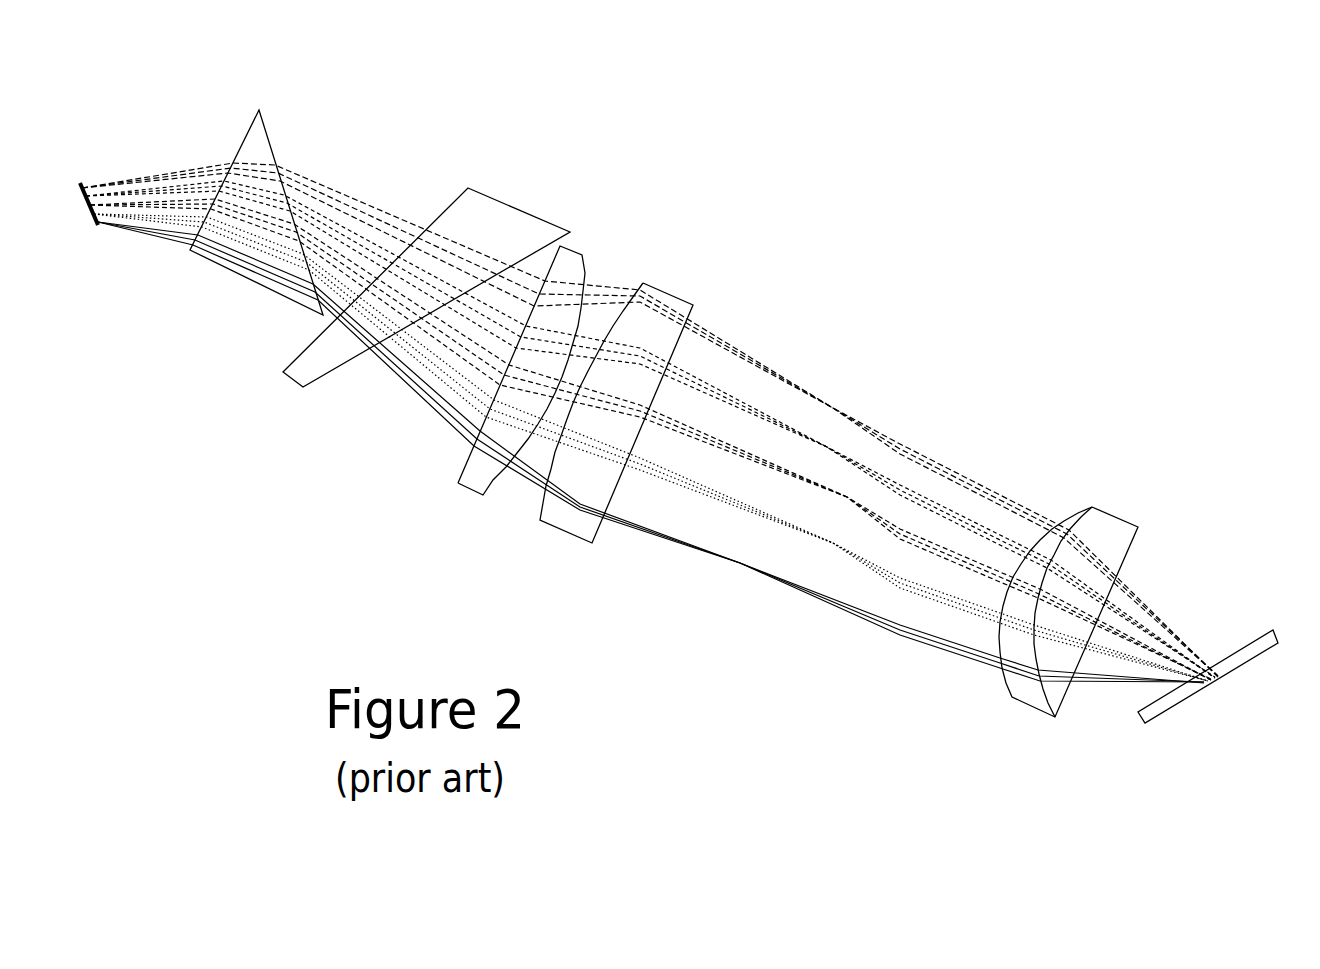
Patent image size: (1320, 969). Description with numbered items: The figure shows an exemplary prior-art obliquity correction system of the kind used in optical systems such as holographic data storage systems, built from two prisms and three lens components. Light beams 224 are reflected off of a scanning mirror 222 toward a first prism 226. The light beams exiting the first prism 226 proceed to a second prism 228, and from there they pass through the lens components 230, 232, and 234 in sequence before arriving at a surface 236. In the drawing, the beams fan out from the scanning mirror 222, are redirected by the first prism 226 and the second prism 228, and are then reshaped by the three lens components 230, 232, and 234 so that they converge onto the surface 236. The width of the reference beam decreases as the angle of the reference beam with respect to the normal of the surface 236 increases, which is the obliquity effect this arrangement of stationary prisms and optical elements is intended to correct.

The scanning mirror 222 is at (80, 183).
The light beams 224 is at (141, 260).
The first prism 226 is at (258, 140).
The second prism 228 is at (495, 213).
The lens component 230 is at (582, 258).
The lens component 232 is at (665, 301).
The lens component 234 is at (1105, 518).
The surface 236 is at (1263, 640).